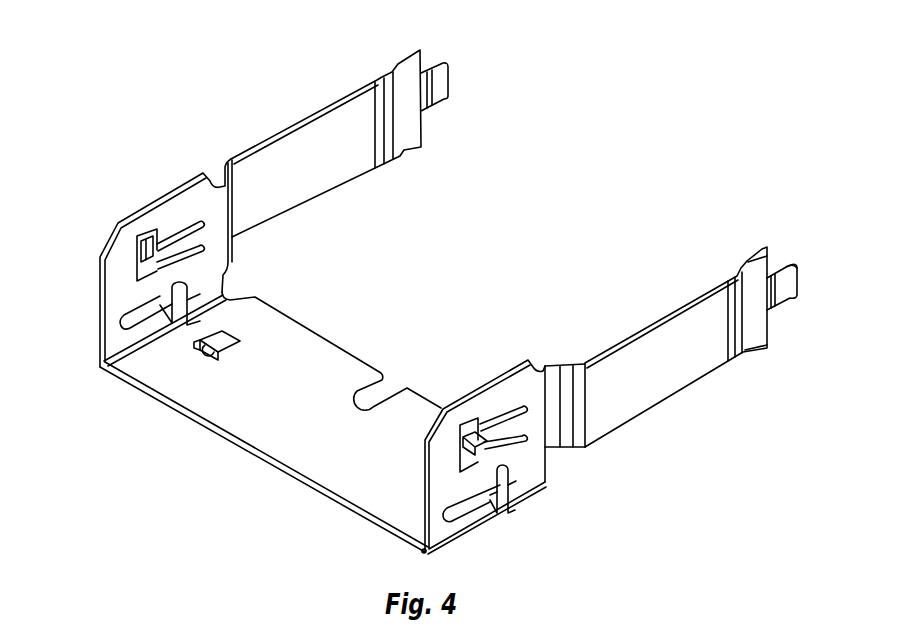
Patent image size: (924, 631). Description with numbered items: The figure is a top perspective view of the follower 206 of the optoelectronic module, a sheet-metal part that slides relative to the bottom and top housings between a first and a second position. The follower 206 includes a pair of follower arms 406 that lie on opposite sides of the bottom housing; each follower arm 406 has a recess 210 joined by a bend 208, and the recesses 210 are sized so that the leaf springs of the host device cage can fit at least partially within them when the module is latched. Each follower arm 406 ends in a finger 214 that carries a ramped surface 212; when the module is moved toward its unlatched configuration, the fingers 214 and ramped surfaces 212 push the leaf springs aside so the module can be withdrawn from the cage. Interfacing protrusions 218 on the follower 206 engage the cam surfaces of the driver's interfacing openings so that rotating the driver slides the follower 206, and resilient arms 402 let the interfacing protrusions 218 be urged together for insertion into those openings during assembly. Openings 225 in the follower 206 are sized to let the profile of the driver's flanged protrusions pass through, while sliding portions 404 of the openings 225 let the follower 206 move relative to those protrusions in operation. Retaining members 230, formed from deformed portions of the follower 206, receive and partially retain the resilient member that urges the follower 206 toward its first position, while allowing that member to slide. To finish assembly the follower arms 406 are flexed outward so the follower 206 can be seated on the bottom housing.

The follower 206 is at (112, 70).
The bend 208 is at (735, 290).
The recess 210 is at (755, 335).
The ramped surface 212 is at (782, 293).
The finger 214 is at (799, 261).
The interfacing protrusion 218 is at (545, 470).
The opening 225 is at (204, 321).
The retaining member 230 is at (232, 333).
The resilient arm 402 is at (190, 240).
The sliding portion 404 is at (108, 328).
The follower arm 406 is at (344, 190).